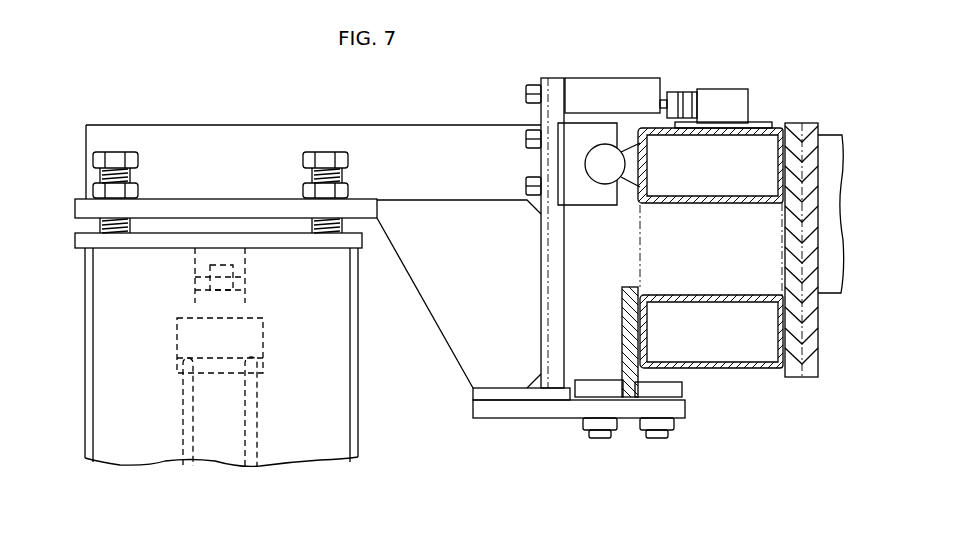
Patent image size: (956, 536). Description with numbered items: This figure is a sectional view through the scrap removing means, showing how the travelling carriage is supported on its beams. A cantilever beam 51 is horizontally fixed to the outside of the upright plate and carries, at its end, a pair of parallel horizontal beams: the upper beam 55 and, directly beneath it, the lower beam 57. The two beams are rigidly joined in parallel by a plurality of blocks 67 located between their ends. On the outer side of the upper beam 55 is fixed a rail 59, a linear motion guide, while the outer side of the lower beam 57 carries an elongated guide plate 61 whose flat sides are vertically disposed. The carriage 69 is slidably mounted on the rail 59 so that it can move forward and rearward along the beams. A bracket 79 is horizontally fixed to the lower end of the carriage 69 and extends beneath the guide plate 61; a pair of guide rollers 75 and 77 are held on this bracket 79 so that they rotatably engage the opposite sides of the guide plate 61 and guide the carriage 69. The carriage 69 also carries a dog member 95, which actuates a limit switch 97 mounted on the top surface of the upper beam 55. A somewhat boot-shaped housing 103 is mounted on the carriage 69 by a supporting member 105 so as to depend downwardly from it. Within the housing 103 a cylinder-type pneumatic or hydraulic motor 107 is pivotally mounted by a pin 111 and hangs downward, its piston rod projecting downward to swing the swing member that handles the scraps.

The beam 51 is at (826, 135).
The upper beam 55 is at (692, 203).
The lower beam 57 is at (748, 368).
The rail 59 is at (601, 175).
The guide plate 61 is at (630, 303).
The block 67 is at (653, 262).
The carriage 69 is at (548, 112).
The guide roller 75 is at (587, 384).
The guide roller 77 is at (678, 390).
The bracket 79 is at (518, 410).
The dog member 95 is at (622, 85).
The limit switch 97 is at (719, 95).
The housing 103 is at (343, 323).
The supporting member 105 is at (215, 138).
The pneumatic or hydraulic motor 107 is at (257, 417).
The pin 111 is at (247, 277).